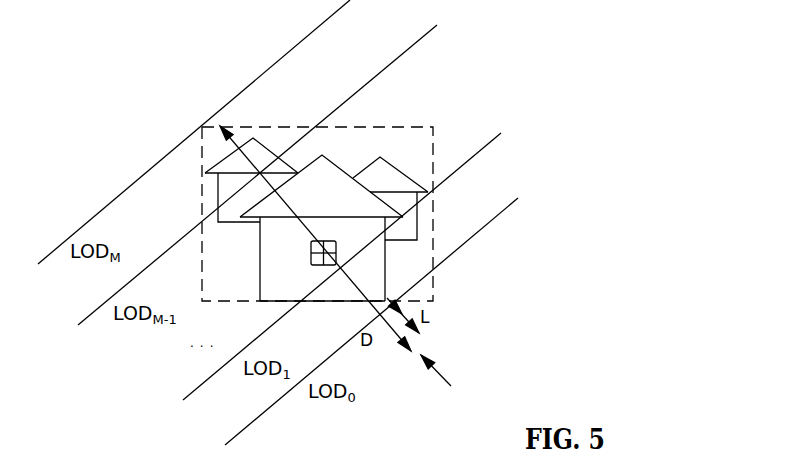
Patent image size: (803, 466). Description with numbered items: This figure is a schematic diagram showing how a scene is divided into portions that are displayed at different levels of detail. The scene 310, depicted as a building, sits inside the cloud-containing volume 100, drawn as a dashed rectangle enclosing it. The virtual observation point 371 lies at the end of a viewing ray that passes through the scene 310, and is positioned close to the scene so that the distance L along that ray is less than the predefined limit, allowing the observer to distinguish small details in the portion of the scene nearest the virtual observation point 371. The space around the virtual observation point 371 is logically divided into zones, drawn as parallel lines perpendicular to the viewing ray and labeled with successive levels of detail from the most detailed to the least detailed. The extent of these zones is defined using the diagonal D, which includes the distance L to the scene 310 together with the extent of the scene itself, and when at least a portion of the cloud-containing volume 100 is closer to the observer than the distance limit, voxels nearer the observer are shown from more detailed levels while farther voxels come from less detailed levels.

The cloud-containing volume 100 is at (420, 124).
The scene 310 is at (262, 143).
The virtual observation point 371 is at (452, 382).